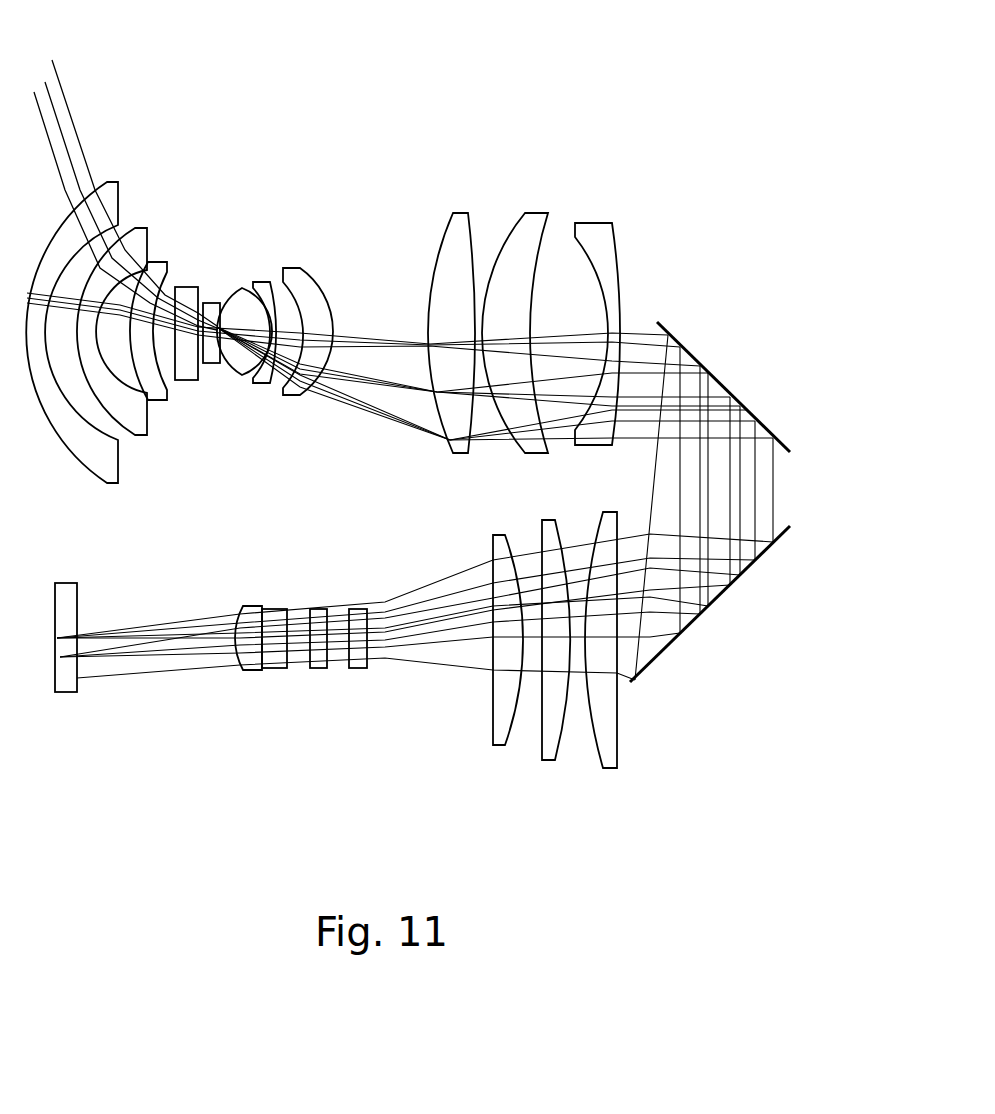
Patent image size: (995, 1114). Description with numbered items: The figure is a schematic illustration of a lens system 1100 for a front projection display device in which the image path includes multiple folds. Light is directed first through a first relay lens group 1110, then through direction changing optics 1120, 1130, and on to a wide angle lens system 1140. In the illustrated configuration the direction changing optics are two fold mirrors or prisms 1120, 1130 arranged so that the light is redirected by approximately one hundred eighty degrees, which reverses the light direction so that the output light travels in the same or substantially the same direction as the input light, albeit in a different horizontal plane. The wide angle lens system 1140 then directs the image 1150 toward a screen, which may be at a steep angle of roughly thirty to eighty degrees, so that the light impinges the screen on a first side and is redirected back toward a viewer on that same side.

The lens system 1100 is at (420, 78).
The first relay lens group 1110 is at (622, 778).
The fold mirror or prism 1120 is at (663, 655).
The fold mirror or prism 1130 is at (718, 378).
The wide angle lens system 1140 is at (615, 175).
The image 1150 is at (70, 117).